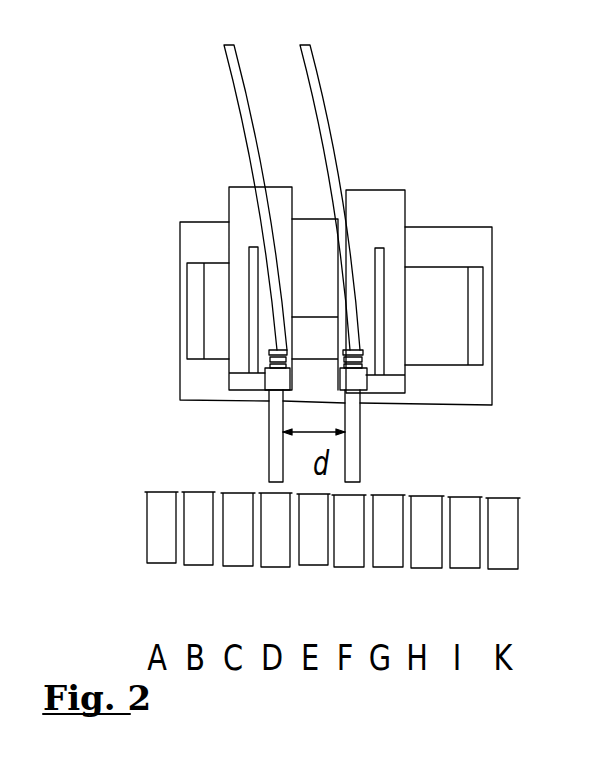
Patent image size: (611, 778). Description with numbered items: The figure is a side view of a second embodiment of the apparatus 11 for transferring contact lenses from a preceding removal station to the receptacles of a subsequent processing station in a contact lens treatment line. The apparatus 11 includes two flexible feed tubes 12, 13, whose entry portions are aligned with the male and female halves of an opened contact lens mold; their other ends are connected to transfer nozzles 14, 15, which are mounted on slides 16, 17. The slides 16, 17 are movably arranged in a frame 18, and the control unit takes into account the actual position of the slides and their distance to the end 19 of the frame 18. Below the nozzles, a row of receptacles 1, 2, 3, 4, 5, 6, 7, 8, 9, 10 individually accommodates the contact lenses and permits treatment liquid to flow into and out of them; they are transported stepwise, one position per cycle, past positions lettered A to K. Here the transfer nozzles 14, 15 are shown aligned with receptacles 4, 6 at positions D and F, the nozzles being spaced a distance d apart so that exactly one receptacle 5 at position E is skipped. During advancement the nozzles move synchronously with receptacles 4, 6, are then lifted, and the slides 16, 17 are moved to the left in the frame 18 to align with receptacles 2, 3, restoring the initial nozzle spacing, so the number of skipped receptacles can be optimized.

The apparatus 11 is at (127, 138).
The flexible feed tube 12 is at (240, 97).
The flexible feed tube 13 is at (317, 78).
The transfer nozzle 14 is at (268, 422).
The transfer nozzle 15 is at (357, 422).
The slide 16 is at (238, 233).
The slide 17 is at (396, 207).
The frame 18 is at (492, 238).
The end of the frame 19 is at (480, 302).
The receptacle 1 is at (163, 563).
The receptacle 2 is at (202, 565).
The receptacle 3 is at (243, 566).
The receptacle 4 is at (282, 567).
The receptacle 5 is at (320, 565).
The receptacle 6 is at (356, 567).
The receptacle 7 is at (395, 567).
The receptacle 8 is at (434, 568).
The receptacle 9 is at (472, 568).
The receptacle 10 is at (510, 569).